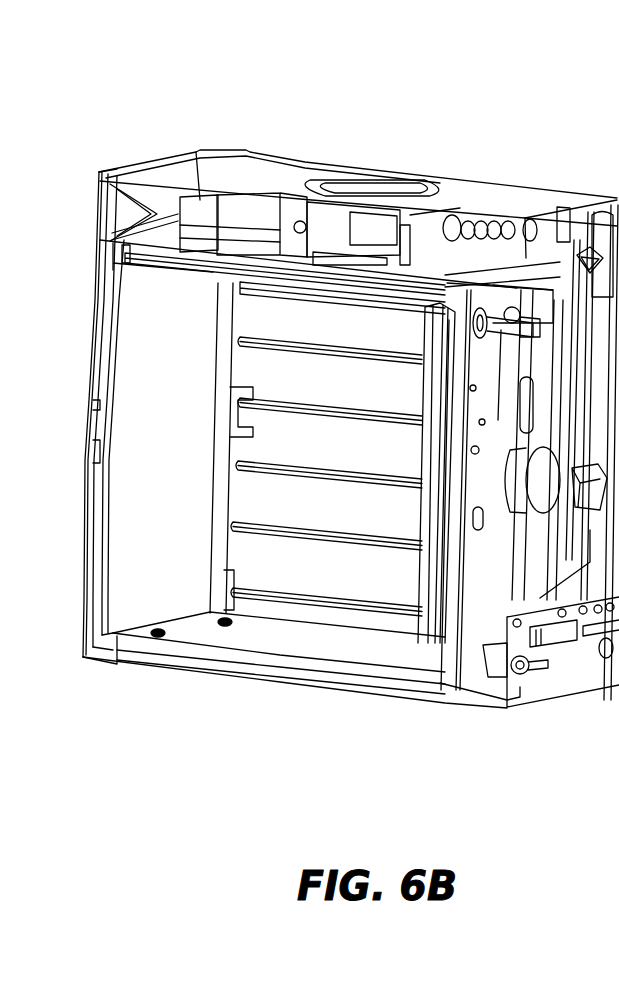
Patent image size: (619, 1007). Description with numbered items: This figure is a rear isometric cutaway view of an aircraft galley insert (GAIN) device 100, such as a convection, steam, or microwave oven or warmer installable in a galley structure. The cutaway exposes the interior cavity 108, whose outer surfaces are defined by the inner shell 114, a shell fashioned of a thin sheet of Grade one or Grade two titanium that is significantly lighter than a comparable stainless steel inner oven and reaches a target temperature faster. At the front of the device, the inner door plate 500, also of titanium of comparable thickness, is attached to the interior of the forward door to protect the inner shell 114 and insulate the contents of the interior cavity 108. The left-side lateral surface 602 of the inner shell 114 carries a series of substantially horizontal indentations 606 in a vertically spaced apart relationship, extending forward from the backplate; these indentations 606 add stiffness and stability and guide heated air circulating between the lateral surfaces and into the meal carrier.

The aircraft galley insert (GAIN) device 100 is at (92, 68).
The inner door plate 500 is at (161, 393).
The interior cavity 108 is at (165, 483).
The inner shell 114 is at (288, 557).
The left-side lateral surface 602 is at (353, 502).
The horizontal indentations 606 is at (320, 410).